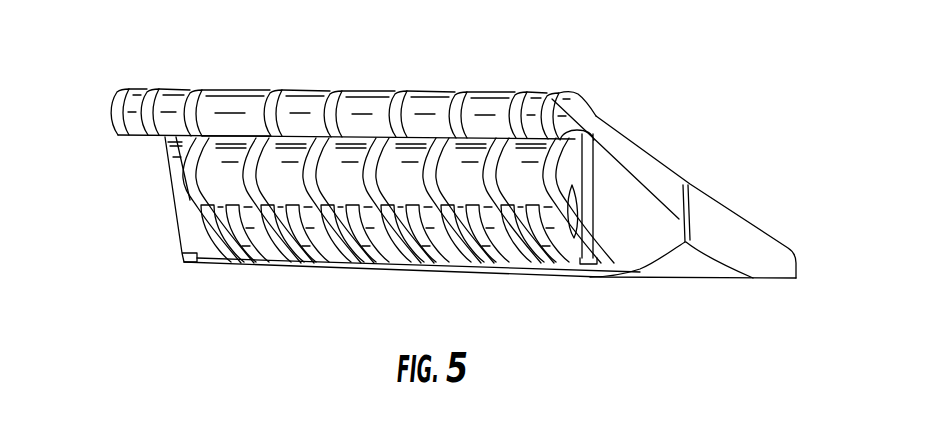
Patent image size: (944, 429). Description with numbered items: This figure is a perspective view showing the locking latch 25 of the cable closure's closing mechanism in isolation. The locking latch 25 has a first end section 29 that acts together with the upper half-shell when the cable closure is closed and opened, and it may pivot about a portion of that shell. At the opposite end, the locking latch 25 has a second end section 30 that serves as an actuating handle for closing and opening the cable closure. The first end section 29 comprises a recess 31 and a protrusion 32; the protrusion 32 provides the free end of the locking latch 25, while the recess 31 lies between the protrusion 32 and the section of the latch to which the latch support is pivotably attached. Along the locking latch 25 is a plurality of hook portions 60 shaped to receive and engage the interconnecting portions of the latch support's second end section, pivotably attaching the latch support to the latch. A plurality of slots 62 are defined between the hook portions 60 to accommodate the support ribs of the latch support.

The locking latch 25 is at (708, 95).
The first end section 29 is at (100, 106).
The second end section 30 is at (789, 210).
The recess 31 is at (564, 152).
The protrusion 32 is at (545, 122).
The hook portions 60 is at (240, 102).
The slots 62 is at (266, 100).